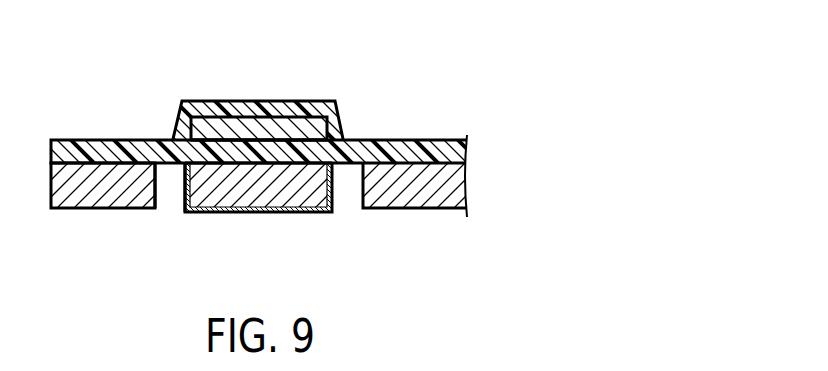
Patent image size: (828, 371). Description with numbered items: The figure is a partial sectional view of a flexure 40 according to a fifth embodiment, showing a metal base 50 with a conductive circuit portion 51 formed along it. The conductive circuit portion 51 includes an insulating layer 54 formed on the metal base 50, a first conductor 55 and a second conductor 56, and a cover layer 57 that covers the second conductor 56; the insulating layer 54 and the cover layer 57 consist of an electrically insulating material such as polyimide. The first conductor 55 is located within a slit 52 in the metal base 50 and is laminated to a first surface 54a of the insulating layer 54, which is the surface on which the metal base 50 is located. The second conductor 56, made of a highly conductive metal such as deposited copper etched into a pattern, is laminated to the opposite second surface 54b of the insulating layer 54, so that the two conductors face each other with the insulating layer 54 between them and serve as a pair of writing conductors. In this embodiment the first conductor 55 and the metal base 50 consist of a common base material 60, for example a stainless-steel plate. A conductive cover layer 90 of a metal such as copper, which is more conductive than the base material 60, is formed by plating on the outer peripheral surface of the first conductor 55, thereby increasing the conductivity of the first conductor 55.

The flexure 40 is at (440, 96).
The metal base 50 is at (98, 190).
The conductive circuit portion 51 is at (158, 110).
The slit 52 is at (158, 183).
The insulating layer 54 is at (390, 141).
The first surface 54a is at (223, 164).
The second surface 54b is at (258, 130).
The first conductor 55 is at (312, 185).
The second conductor 56 is at (289, 128).
The cover layer 57 is at (218, 101).
The base material 60 is at (427, 190).
The conductive cover layer 90 is at (273, 213).